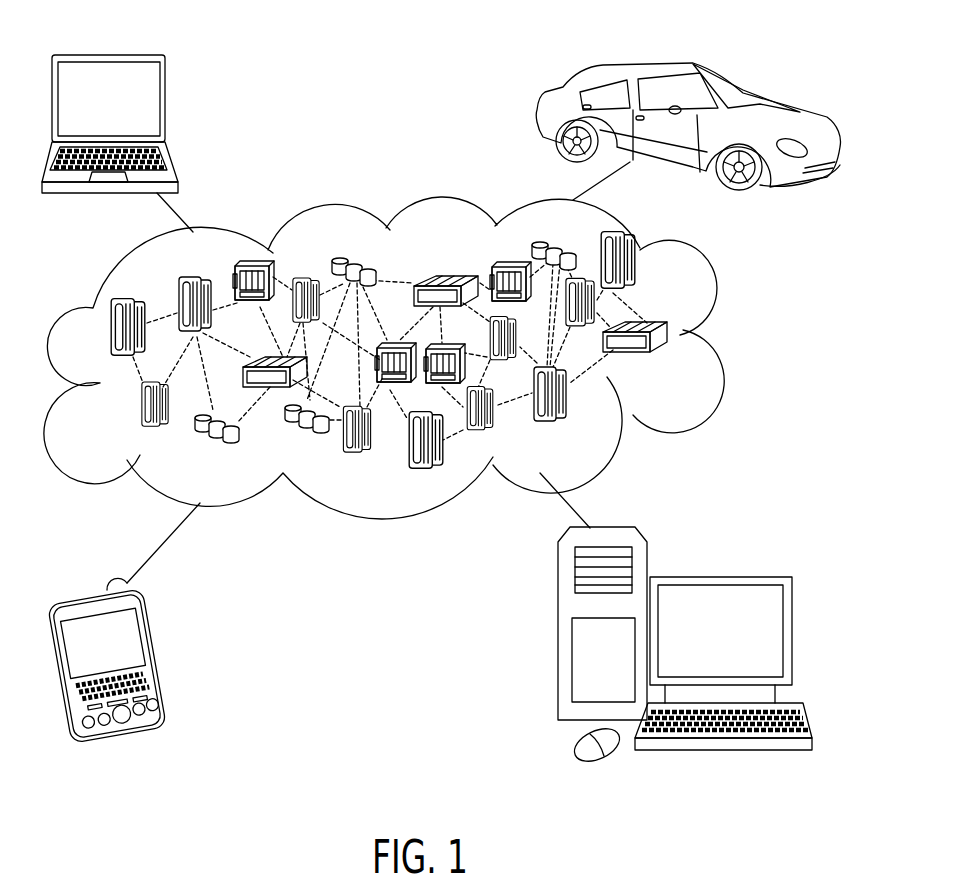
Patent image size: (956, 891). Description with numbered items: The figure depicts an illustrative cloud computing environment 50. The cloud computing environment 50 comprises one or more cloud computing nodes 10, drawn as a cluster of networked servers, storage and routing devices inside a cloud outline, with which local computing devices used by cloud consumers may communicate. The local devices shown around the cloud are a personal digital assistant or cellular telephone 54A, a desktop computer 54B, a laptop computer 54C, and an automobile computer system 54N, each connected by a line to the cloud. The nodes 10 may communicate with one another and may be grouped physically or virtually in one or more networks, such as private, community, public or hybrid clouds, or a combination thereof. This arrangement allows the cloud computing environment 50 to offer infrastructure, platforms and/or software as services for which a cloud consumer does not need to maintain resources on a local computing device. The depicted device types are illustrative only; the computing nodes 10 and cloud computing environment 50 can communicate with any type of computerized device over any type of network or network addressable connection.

The cloud computing node 10 is at (410, 358).
The cloud computing environment 50 is at (723, 337).
The personal digital assistant or cellular telephone 54A is at (158, 651).
The desktop computer 54B is at (725, 576).
The laptop computer 54C is at (167, 110).
The automobile computer system 54N is at (537, 122).